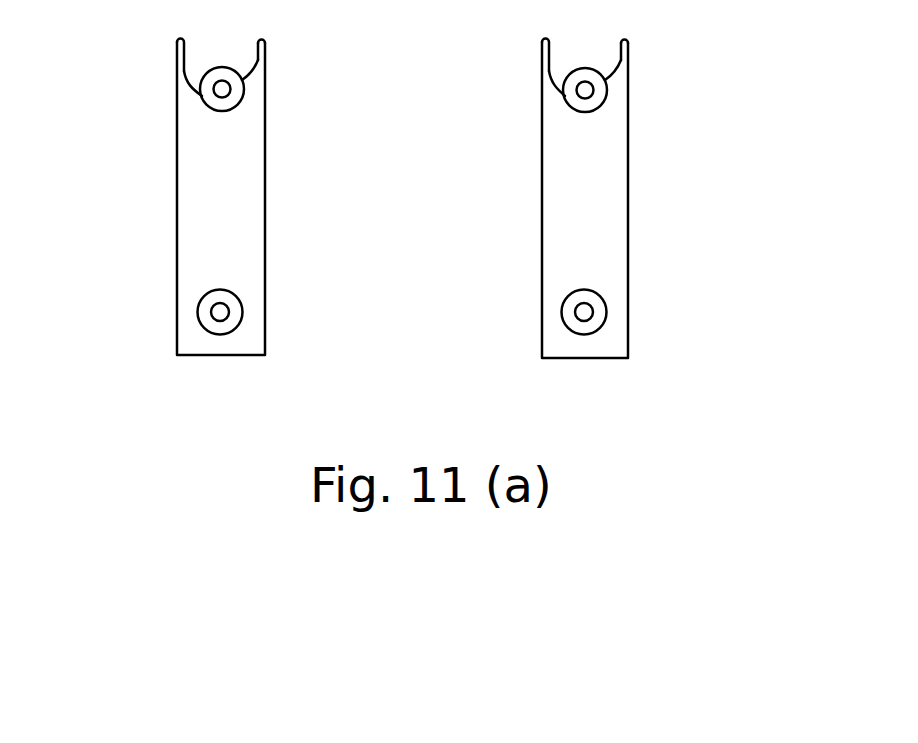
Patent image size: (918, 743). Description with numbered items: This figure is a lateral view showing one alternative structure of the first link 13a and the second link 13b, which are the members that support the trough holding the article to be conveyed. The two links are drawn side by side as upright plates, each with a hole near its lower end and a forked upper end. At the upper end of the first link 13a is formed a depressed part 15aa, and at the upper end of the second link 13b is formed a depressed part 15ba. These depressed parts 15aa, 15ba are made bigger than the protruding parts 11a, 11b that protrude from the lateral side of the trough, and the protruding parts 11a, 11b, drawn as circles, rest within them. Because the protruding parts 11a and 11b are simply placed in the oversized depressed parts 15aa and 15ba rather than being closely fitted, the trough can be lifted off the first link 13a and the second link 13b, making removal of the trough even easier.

The first link 13a is at (234, 180).
The second link 13b is at (671, 182).
The protruding part 11a is at (226, 89).
The protruding part 11b is at (589, 90).
The depressed part 15aa is at (195, 81).
The depressed part 15ba is at (558, 81).